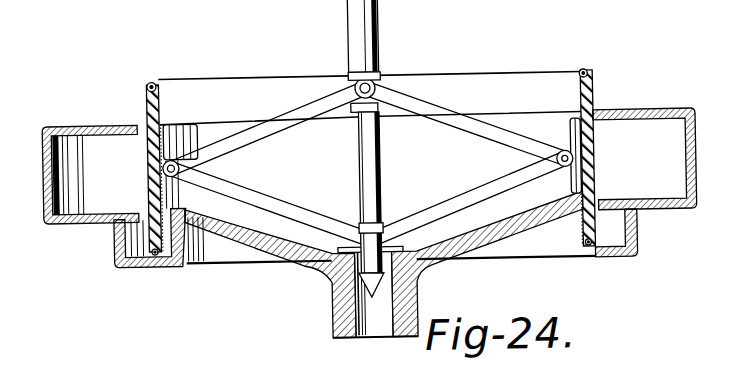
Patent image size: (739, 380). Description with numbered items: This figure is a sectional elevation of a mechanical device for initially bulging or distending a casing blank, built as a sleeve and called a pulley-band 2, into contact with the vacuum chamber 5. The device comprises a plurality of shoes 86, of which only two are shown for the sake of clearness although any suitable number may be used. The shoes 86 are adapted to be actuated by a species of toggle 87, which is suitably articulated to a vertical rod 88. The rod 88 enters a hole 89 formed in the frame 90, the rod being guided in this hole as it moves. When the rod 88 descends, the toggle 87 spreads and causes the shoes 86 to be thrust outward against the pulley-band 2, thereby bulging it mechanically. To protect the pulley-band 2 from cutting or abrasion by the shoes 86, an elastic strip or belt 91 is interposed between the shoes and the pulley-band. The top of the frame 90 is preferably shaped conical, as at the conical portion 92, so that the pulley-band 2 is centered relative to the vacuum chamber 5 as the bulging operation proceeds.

The pulley-band 2 is at (150, 104).
The vacuum chamber 5 is at (46, 209).
The shoes 86 is at (166, 146).
The toggle 87 is at (367, 164).
The rod 88 is at (366, 33).
The hole 89 is at (372, 325).
The frame 90 is at (318, 267).
The elastic strip or belt 91 is at (229, 133).
The conical top of the frame 92 is at (562, 216).